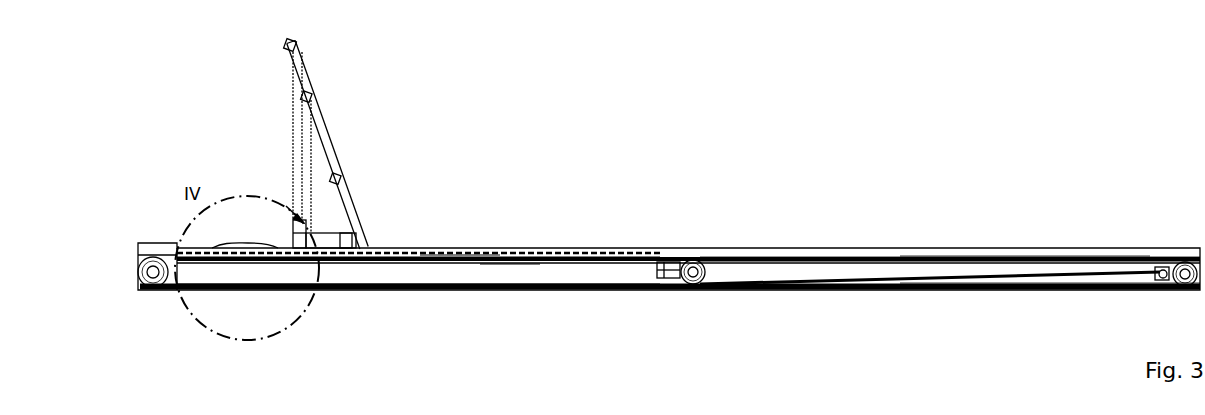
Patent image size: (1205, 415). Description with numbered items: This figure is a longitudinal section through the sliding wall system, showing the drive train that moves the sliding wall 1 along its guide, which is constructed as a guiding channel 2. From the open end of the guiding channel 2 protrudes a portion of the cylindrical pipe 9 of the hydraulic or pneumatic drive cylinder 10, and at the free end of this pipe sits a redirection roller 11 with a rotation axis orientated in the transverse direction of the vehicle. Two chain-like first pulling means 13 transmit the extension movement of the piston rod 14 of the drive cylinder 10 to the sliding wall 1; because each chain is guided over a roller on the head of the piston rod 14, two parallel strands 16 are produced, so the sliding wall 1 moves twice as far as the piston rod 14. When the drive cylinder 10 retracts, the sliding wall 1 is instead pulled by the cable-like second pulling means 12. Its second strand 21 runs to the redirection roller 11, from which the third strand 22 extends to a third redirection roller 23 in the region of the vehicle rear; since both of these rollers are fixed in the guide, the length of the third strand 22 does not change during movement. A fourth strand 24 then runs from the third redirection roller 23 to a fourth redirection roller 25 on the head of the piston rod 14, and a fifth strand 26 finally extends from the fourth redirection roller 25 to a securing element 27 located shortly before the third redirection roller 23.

The sliding wall 1 is at (315, 102).
The guiding channel 2 is at (758, 246).
The cylindrical pipe 9 is at (510, 276).
The drive cylinder 10 is at (557, 250).
The redirection roller 11 is at (153, 273).
The second pulling means 12 is at (870, 258).
The first pulling means 13 is at (456, 254).
The piston rod 14 is at (665, 267).
The strands 16 is at (419, 281).
The second strand 21 is at (176, 246).
The third strand 22 is at (1073, 281).
The third redirection roller 23 is at (1185, 272).
The fourth strand 24 is at (967, 256).
The fourth redirection roller 25 is at (695, 270).
The fifth strand 26 is at (1024, 270).
The securing element 27 is at (1163, 272).